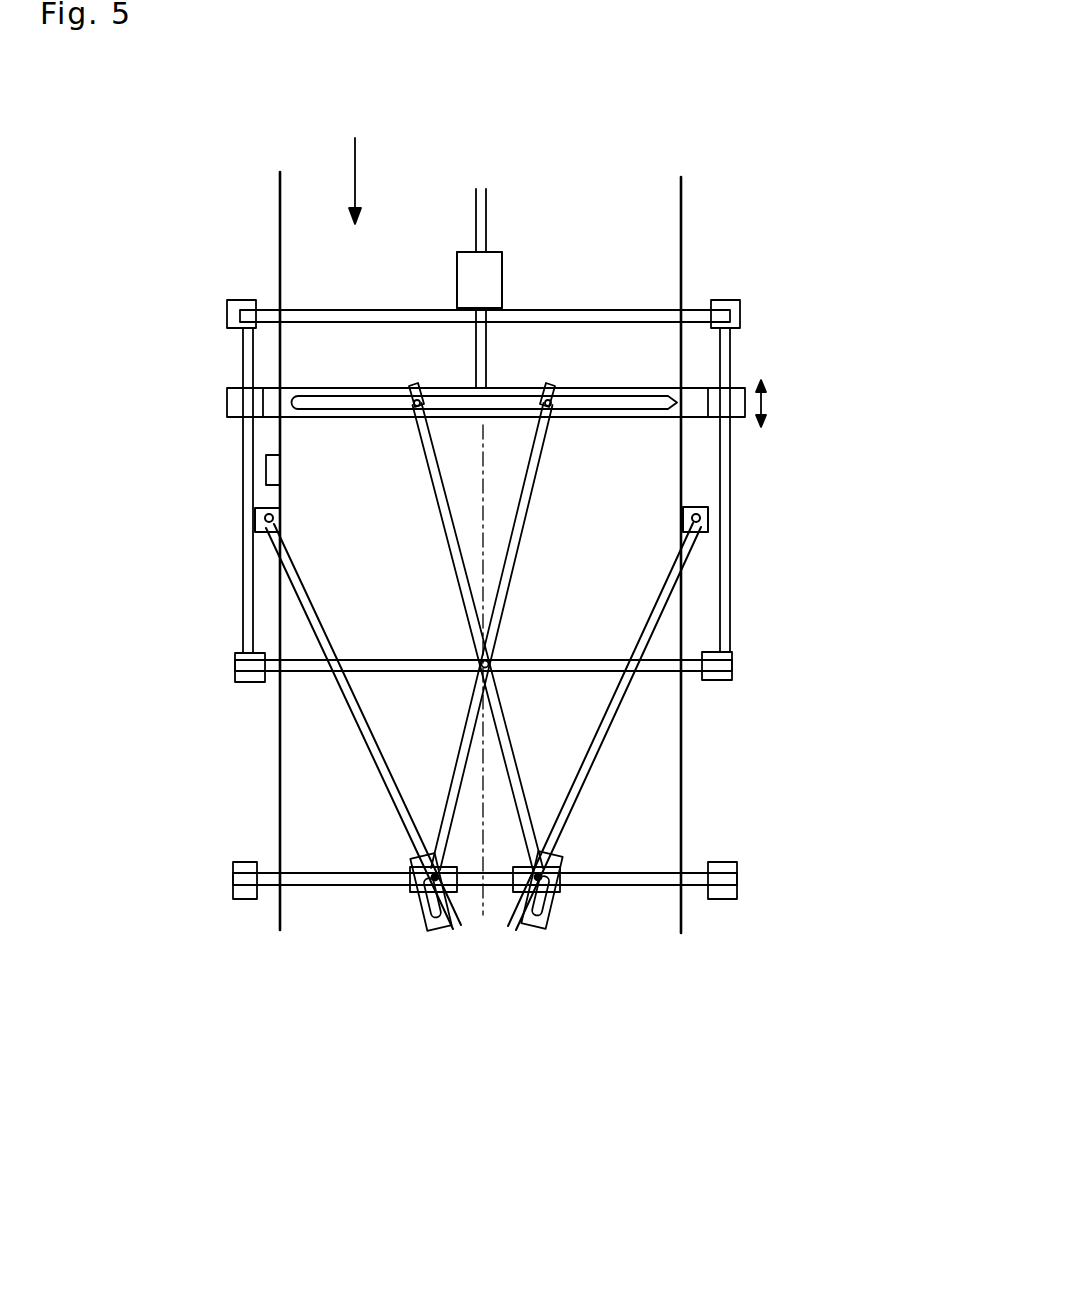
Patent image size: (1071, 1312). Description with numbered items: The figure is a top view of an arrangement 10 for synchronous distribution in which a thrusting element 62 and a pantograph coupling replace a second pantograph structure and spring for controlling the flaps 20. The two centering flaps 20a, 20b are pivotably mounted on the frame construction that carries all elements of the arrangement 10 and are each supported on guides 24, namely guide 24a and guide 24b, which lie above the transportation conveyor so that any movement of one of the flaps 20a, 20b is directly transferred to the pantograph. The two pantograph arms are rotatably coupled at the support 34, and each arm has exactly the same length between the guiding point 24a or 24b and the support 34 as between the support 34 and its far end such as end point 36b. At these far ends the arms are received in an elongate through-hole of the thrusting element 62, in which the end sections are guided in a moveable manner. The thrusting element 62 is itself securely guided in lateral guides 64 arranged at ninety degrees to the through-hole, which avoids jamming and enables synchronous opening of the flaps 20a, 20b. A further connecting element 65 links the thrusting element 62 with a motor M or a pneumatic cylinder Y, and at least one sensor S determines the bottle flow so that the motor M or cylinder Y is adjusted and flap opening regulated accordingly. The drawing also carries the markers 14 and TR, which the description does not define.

The arrangement 10 is at (362, 1144).
The drive unit 14 is at (597, 222).
The flaps 20 is at (490, 718).
The centering flap 20a is at (312, 625).
The centering flap 20b is at (643, 630).
The guides 24 is at (504, 934).
The guide 24a is at (432, 880).
The guide 24b is at (542, 880).
The support 34 is at (491, 668).
The end point 36b is at (412, 400).
The thrusting element 62 is at (682, 405).
The lateral guides 64 is at (727, 497).
The connecting element 65 is at (485, 358).
The sensor S is at (270, 455).
The transport direction TR is at (362, 160).
The motor M is at (481, 265).
The pneumatic cylinder Y is at (479, 280).